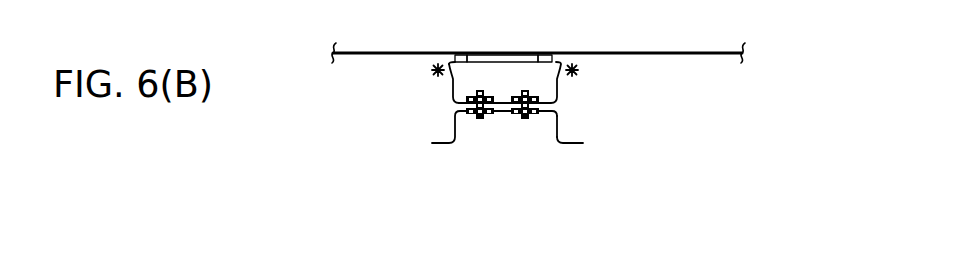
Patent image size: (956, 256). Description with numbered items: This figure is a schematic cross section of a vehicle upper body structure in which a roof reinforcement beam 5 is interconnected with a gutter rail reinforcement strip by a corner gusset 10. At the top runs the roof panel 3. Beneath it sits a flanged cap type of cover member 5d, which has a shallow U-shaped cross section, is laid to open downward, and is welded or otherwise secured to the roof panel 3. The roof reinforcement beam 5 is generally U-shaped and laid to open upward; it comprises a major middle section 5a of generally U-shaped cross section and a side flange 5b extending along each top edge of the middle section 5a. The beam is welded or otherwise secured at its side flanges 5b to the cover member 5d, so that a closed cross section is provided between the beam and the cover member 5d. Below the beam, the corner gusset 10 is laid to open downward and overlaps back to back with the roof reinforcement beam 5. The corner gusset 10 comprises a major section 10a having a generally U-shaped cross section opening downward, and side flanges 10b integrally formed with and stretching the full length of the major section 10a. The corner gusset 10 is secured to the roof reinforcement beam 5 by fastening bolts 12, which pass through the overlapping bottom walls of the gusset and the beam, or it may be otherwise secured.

The roof panel 3 is at (628, 52).
The roof reinforcement beam 5 is at (586, 89).
The middle section 5a is at (449, 93).
The side flange 5b is at (436, 73).
The cover member 5d is at (510, 53).
The corner gusset 10 is at (437, 127).
The major section 10a is at (561, 123).
The side flange 10b is at (583, 143).
The fastening bolt 12 is at (526, 119).